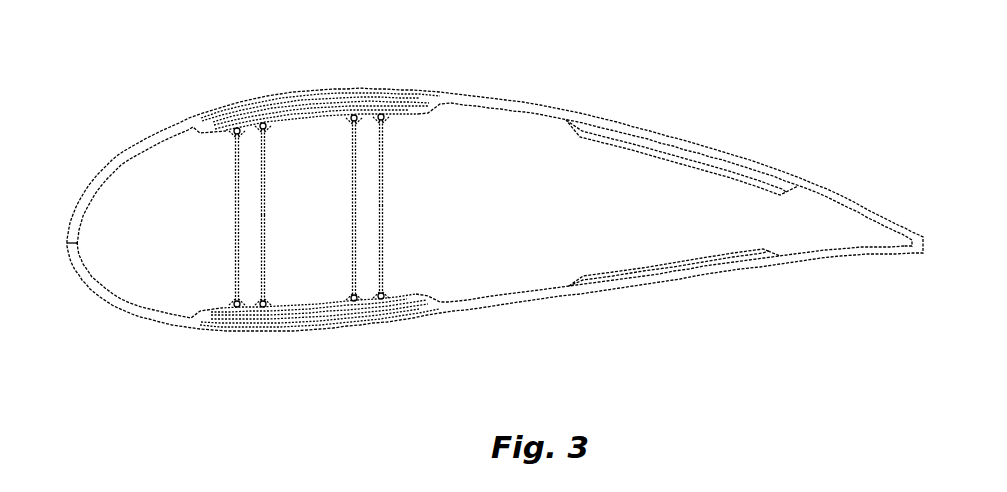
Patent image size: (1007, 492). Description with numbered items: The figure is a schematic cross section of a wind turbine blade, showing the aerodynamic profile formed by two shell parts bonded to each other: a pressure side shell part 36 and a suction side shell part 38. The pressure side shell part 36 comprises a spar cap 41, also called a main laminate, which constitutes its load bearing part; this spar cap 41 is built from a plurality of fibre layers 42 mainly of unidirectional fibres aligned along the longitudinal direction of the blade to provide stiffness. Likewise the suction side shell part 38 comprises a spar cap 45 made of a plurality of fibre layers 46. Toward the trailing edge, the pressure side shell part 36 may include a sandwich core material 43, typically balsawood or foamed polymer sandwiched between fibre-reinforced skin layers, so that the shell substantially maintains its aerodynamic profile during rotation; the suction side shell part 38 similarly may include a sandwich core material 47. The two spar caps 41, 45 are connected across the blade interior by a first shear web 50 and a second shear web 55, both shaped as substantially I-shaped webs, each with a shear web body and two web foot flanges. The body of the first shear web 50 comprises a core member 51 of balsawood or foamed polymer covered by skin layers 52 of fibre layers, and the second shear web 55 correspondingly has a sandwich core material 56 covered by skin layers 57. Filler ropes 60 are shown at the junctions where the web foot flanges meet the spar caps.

The pressure side shell part 36 is at (543, 299).
The suction side shell part 38 is at (528, 104).
The spar cap 41 is at (392, 320).
The fibre layers 42 is at (327, 330).
The sandwich core material 43 is at (683, 263).
The spar cap 45 is at (283, 92).
The fibre layers 46 is at (383, 93).
The sandwich core material 47 is at (680, 148).
The first shear web 50 is at (271, 215).
The core member 51 is at (266, 206).
The skin layers 52 is at (266, 172).
The second shear web 55 is at (397, 208).
The sandwich core material of second shear web 56 is at (383, 200).
The skin layers of second shear web 57 is at (385, 182).
The filler ropes 60 is at (378, 296).